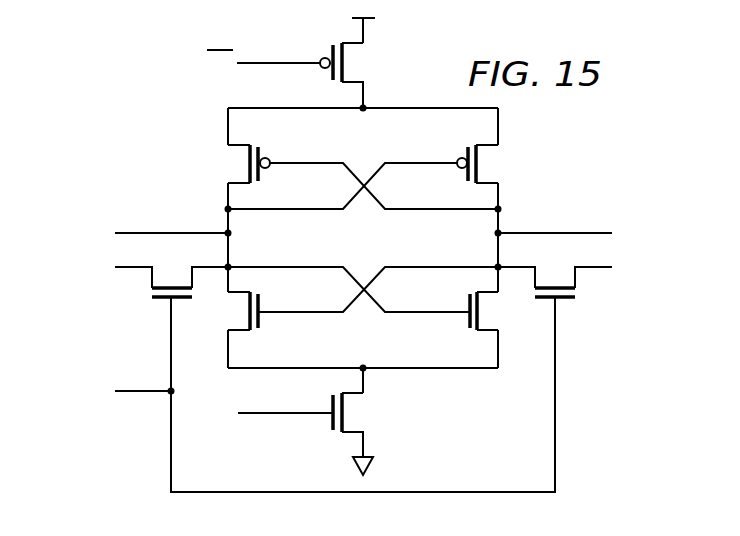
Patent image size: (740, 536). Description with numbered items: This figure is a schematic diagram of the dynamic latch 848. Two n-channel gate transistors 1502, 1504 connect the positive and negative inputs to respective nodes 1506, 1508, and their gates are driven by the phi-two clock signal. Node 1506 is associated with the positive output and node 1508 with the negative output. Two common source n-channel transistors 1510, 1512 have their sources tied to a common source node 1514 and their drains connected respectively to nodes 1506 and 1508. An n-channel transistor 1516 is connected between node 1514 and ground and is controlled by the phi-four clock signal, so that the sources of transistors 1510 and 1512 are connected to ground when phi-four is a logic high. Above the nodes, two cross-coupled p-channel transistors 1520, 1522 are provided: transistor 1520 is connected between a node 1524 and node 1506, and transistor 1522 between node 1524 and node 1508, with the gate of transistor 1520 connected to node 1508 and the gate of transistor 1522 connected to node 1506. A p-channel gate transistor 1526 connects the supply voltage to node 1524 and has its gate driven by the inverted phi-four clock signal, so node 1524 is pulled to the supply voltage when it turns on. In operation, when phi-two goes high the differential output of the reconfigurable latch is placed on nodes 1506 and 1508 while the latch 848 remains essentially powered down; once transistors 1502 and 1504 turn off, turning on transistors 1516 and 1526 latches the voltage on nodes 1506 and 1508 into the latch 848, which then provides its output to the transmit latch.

The dynamic latch 848 is at (142, 103).
The n-channel gate transistor 1502 is at (160, 300).
The n-channel gate transistor 1504 is at (568, 300).
The node 1506 is at (262, 250).
The node 1508 is at (495, 262).
The common source n-channel transistor 1510 is at (262, 325).
The common source n-channel transistor 1512 is at (468, 325).
The common source node 1514 is at (367, 372).
The n-channel transistor 1516 is at (330, 427).
The cross-coupled p-channel transistor 1520 is at (262, 153).
The cross-coupled p-channel transistor 1522 is at (467, 155).
The node 1524 is at (368, 107).
The p-channel gate transistor 1526 is at (330, 50).